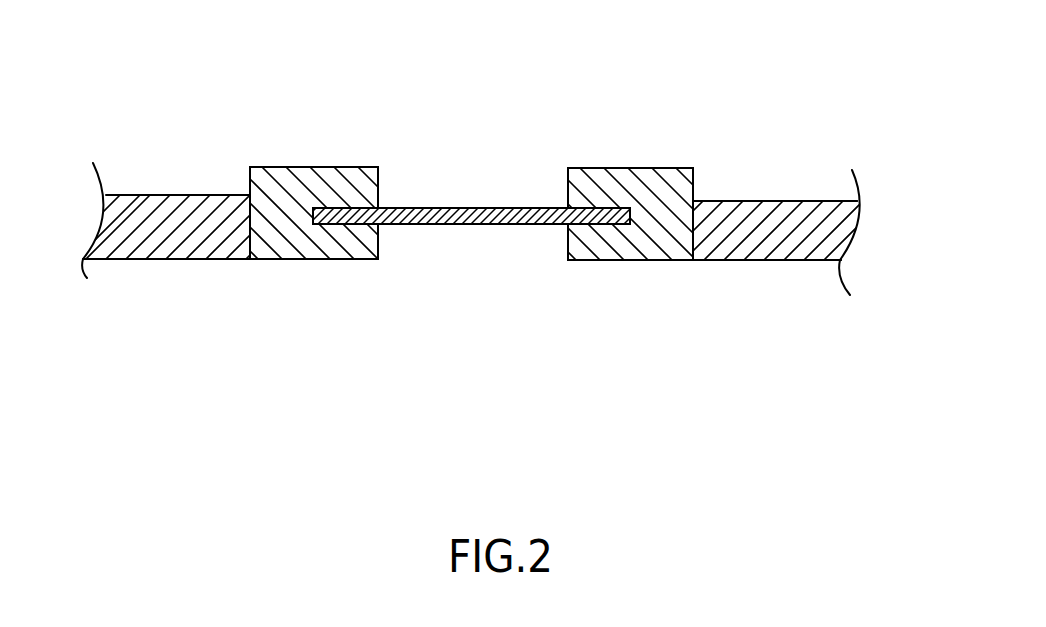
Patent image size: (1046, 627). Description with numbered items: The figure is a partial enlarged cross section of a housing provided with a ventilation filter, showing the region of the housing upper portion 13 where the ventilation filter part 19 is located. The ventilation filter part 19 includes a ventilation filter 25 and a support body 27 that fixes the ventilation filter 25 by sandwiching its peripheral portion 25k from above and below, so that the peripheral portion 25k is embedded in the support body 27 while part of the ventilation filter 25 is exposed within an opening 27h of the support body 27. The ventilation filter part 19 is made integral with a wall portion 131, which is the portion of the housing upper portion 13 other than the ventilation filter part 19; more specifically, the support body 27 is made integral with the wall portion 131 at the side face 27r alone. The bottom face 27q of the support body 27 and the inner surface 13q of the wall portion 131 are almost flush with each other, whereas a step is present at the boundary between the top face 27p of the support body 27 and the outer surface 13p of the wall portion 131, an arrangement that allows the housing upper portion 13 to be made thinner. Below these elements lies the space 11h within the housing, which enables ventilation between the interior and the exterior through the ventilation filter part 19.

The space 11h is at (493, 345).
The ventilation filter part 19 is at (297, 147).
The ventilation filter 25 is at (512, 207).
The peripheral portion 25k is at (322, 207).
The support body 27 is at (653, 183).
The opening 27h is at (385, 174).
The top face 27p is at (593, 167).
The bottom face 27q is at (602, 262).
The side face 27r is at (705, 262).
The housing upper portion 13 is at (738, 103).
The outer surface 13p is at (790, 200).
The inner surface 13q is at (802, 264).
The wall portion 131 is at (837, 253).